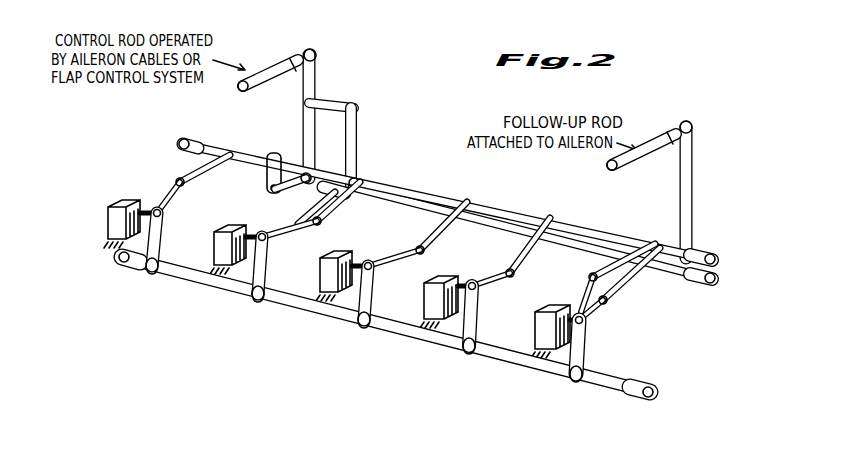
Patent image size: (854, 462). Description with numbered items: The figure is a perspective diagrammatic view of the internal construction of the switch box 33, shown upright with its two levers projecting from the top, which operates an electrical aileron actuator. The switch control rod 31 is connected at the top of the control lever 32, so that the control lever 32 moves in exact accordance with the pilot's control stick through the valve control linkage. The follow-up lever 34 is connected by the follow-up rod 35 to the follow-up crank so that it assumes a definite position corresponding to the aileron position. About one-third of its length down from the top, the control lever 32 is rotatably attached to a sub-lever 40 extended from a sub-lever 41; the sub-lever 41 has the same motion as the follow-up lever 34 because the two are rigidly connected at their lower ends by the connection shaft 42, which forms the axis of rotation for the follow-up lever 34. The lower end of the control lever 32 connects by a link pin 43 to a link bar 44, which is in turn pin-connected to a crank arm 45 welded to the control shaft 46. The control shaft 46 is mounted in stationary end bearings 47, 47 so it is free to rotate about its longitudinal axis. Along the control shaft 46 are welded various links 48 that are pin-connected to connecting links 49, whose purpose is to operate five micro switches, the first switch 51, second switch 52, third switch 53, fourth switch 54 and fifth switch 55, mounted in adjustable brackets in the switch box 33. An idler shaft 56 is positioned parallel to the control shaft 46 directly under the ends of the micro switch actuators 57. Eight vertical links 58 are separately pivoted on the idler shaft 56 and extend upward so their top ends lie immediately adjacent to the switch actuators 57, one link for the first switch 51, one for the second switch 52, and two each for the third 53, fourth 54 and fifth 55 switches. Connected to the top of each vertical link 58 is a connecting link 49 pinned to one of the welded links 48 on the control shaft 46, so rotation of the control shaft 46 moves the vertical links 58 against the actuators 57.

The switch control rod 31 is at (292, 54).
The control lever 32 is at (316, 76).
The switch box 33 is at (281, 352).
The follow-up lever 34 is at (690, 168).
The follow-up rod 35 is at (667, 130).
The sub-lever 40 is at (340, 102).
The sub-lever 41 is at (358, 126).
The connection shaft 42 is at (392, 186).
The link pin 43 is at (306, 184).
The link bar 44 is at (302, 170).
The crank arm 45 is at (268, 150).
The control shaft 46 is at (217, 146).
The end bearings 47 is at (188, 138).
The welded links 48 is at (216, 165).
The connecting links 49 is at (181, 188).
The first micro switch 51 is at (122, 205).
The second micro switch 52 is at (214, 247).
The third micro switch 53 is at (322, 270).
The fourth micro switch 54 is at (427, 297).
The fifth micro switch 55 is at (537, 327).
The idler shaft 56 is at (473, 357).
The micro switch actuators 57 is at (146, 208).
The vertical links 58 is at (146, 268).